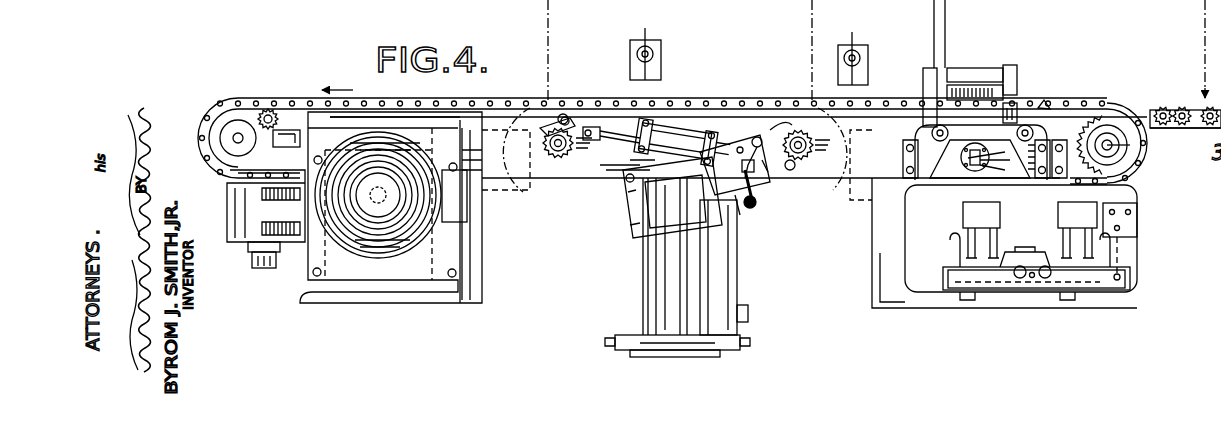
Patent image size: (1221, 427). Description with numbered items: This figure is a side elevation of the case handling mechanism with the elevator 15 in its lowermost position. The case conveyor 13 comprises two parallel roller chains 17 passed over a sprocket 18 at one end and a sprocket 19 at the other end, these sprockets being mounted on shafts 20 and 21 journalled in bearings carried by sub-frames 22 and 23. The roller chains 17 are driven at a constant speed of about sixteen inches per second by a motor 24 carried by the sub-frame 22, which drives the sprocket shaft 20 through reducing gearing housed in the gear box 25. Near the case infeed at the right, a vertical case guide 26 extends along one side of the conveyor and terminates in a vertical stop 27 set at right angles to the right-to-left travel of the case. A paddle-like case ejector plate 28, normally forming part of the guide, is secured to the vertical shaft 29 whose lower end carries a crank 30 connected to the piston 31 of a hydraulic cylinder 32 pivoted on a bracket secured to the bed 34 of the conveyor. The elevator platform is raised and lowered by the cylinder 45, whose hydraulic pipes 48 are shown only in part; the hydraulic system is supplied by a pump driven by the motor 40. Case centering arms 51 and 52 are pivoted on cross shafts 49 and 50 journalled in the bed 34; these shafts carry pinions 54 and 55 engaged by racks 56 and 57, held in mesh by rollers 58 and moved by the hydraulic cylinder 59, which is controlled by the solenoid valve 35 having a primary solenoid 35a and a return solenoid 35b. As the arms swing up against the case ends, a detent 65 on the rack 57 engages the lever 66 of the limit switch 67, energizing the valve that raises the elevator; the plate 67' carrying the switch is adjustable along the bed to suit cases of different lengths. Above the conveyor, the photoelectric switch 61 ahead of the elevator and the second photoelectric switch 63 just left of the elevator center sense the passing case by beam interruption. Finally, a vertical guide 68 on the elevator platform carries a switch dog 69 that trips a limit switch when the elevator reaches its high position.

The case conveyor 13 is at (703, 96).
The elevator 15 is at (637, 220).
The roller chains 17 is at (479, 103).
The sprocket 18 is at (261, 110).
The sprocket 19 is at (1134, 172).
The sprocket shaft 20 is at (238, 137).
The shaft 21 is at (1118, 147).
The sub-frame 22 is at (313, 288).
The sub-frame 23 is at (1138, 294).
The motor 24 is at (228, 238).
The gear box 25 is at (277, 115).
The vertical case guide 26 is at (1042, 106).
The vertical stop 27 is at (936, 67).
The case ejector plate 28 is at (975, 72).
The case release shaft 29 is at (1013, 69).
The crank 30 is at (973, 170).
The piston 31 is at (976, 152).
The hydraulic cylinder 32 is at (986, 168).
The bed 34 is at (627, 172).
The solenoid valve 35 is at (930, 256).
The primary solenoid 35a is at (988, 217).
The secondary solenoid 35b is at (1090, 217).
The motor 40 is at (380, 245).
The elevator cylinder 45 is at (642, 255).
The hydraulic pipes 48 is at (728, 353).
The cross shaft 49 is at (566, 152).
The cross shaft 50 is at (813, 143).
The case centering arm 51 is at (542, 70).
The case centering arm 52 is at (833, 95).
The pinion 54 is at (554, 158).
The pinion 55 is at (793, 125).
The rack 56 is at (583, 126).
The rack 57 is at (766, 174).
The rollers 58 is at (566, 116).
The hydraulic cylinder 59 is at (664, 132).
The photoelectric switch 61 is at (859, 55).
The second photoelectric switch 63 is at (656, 53).
The detent 65 is at (740, 130).
The lever 66 is at (753, 205).
The limit switch 67 is at (699, 210).
The plate 67' is at (778, 228).
The vertical guide 68 is at (737, 278).
The switch dog 69 is at (748, 311).